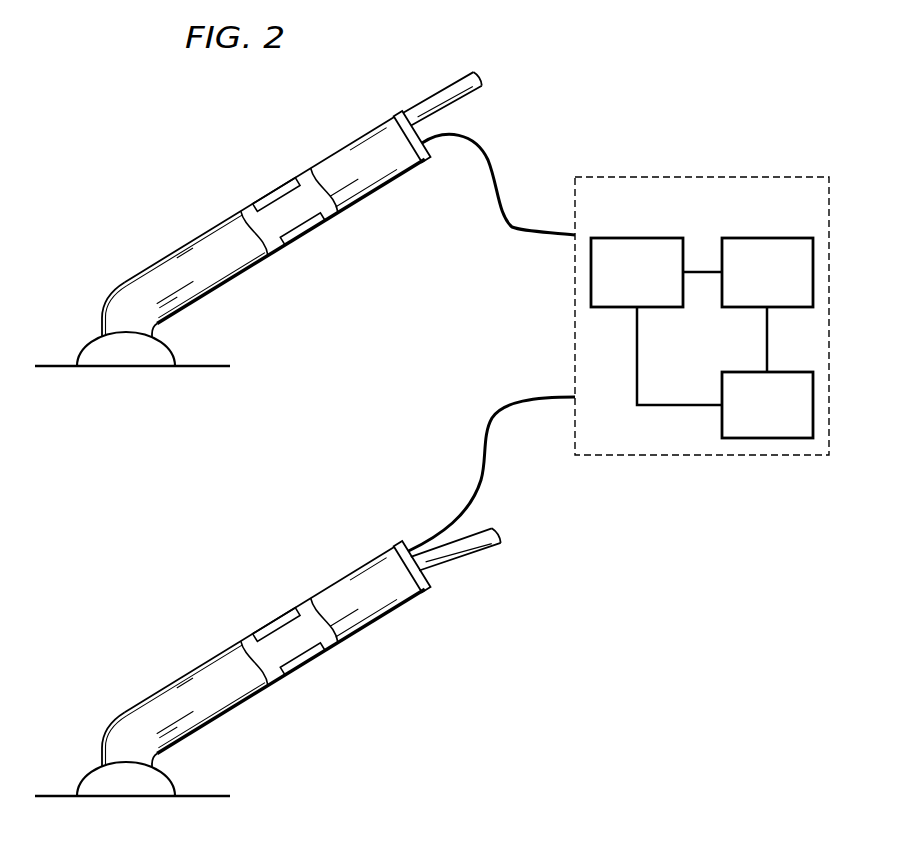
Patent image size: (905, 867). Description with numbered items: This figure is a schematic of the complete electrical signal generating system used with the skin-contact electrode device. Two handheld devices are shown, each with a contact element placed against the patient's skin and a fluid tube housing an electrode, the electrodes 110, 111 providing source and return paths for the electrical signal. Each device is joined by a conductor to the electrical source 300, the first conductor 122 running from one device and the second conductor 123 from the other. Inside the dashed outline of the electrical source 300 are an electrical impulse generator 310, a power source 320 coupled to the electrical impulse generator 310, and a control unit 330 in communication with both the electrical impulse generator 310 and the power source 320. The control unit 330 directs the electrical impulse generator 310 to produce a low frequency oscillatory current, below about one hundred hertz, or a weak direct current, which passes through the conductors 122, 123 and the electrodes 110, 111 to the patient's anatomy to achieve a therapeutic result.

The electrode 110 is at (278, 192).
The electrode 111 is at (284, 637).
The conductor 122 is at (496, 208).
The conductor 123 is at (483, 452).
The electrical source 300 is at (752, 177).
The electrical impulse generator 310 is at (591, 280).
The power source 320 is at (814, 401).
The control unit 330 is at (814, 268).